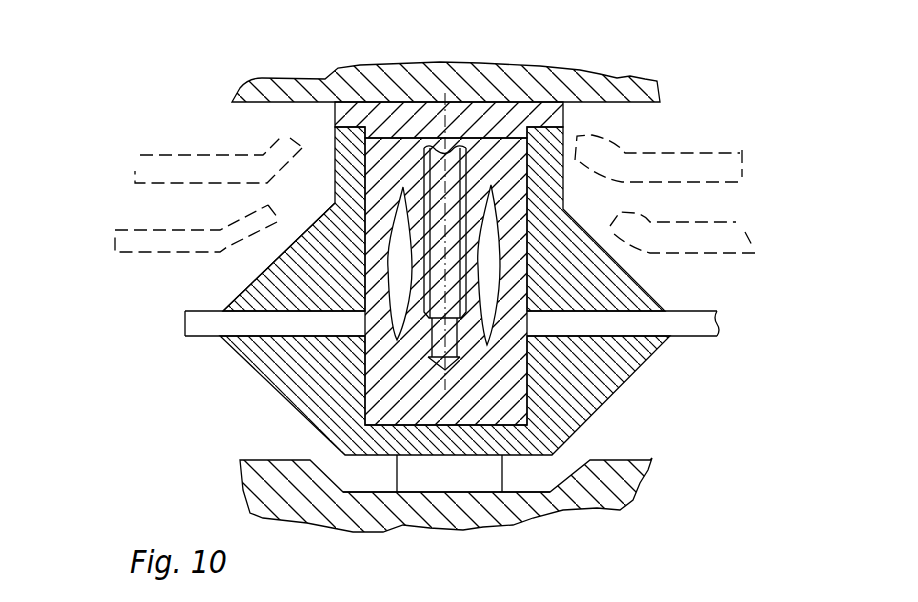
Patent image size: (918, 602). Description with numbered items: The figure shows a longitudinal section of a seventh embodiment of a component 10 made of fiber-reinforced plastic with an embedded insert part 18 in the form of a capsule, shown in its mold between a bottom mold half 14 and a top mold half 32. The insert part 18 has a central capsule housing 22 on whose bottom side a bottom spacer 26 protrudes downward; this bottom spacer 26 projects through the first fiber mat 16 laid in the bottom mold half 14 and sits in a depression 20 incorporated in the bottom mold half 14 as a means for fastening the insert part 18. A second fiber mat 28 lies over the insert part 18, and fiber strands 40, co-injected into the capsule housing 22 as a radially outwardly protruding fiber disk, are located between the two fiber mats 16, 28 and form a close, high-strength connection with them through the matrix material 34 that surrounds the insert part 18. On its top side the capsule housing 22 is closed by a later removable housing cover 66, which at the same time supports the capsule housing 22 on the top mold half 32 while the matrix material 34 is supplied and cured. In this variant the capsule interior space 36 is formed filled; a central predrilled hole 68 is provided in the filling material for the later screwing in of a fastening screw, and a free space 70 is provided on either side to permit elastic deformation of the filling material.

The component made of fiber-reinforced plastic 10 is at (214, 122).
The bottom mold half 14 is at (618, 500).
The first fiber mat 16 is at (132, 240).
The insert part 18 is at (232, 286).
The depression in the bottom mold half 20 is at (478, 493).
The capsule housing 22 is at (330, 447).
The bottom spacer 26 is at (540, 482).
The second fiber mat 28 is at (147, 157).
The top mold half 32 is at (622, 80).
The matrix material 34 is at (308, 400).
The capsule interior space 36 is at (473, 393).
The fiber strands 40 is at (205, 333).
The housing cover 66 is at (470, 152).
The predrilled hole 68 is at (457, 165).
The free space 70 is at (397, 233).